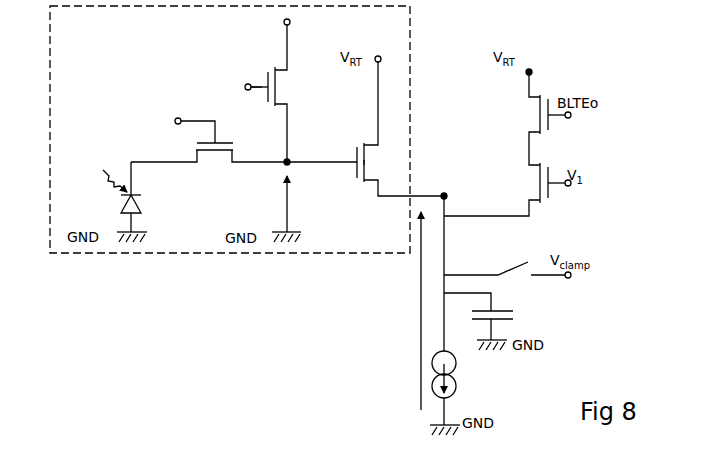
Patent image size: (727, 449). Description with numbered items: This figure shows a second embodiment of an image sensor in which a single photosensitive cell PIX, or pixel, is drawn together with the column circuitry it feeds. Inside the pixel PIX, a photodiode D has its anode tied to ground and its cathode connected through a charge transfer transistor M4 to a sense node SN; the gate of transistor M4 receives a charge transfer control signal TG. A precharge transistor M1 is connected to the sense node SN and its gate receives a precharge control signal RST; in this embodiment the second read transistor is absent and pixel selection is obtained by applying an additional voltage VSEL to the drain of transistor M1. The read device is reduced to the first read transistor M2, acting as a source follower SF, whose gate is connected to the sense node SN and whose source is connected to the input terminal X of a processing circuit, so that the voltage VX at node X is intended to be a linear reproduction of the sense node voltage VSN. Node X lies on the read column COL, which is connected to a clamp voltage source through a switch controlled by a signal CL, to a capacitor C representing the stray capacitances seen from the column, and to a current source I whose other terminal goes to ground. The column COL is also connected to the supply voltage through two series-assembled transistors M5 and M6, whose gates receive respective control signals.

The photosensitive cell PIX is at (410, 52).
The precharge transistor M1 is at (272, 114).
The first read transistor M2 is at (400, 126).
The charge transfer transistor M4 is at (244, 161).
The transistor M5 is at (540, 167).
The transistor M6 is at (540, 101).
The photodiode D is at (132, 202).
The sense node SN is at (288, 162).
The source follower SF is at (381, 152).
The input terminal X is at (440, 263).
The read column COL is at (448, 206).
The control signal CL is at (509, 265).
The capacitor C is at (488, 321).
The current source I is at (448, 393).
The charge transfer control signal TG is at (182, 122).
The precharge control signal RST is at (238, 88).
The additional voltage VSEL is at (262, 41).
The sense node voltage VSN is at (293, 209).
The voltage at node X VX is at (403, 311).